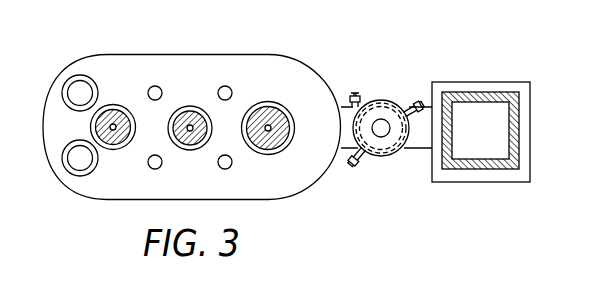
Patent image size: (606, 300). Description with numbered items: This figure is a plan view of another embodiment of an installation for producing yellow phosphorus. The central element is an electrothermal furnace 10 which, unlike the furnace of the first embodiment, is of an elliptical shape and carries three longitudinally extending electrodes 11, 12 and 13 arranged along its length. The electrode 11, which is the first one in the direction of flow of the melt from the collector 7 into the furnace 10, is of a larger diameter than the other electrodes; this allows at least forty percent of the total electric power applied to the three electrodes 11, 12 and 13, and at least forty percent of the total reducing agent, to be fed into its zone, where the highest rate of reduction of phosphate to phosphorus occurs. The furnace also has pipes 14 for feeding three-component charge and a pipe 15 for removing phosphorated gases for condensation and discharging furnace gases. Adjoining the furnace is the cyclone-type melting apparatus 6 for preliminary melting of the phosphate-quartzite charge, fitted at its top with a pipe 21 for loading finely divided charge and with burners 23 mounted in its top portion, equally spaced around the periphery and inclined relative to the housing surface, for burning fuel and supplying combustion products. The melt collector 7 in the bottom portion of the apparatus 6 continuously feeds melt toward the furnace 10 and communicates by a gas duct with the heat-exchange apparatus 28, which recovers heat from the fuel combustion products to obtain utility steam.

The cyclone-type melting apparatus 6 is at (386, 98).
The melt collector 7 is at (347, 150).
The electrothermal furnace 10 is at (300, 58).
The electrode 11 is at (275, 154).
The electrode 12 is at (196, 149).
The electrode 13 is at (118, 150).
The pipes 14 is at (219, 90).
The pipe 15 is at (85, 173).
The pipe 21 is at (388, 134).
The burners 23 is at (361, 171).
The heat-exchange apparatus 28 is at (481, 80).